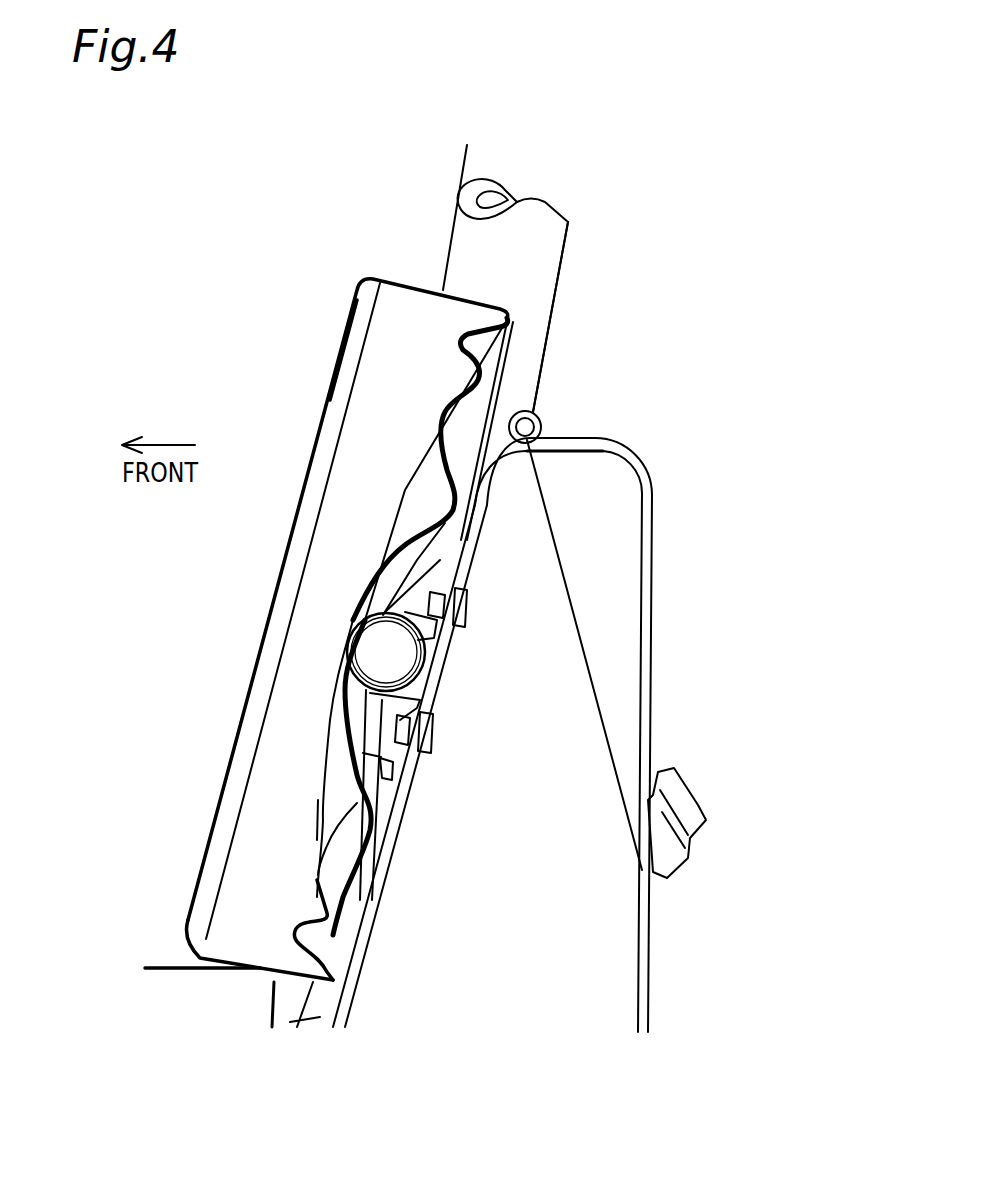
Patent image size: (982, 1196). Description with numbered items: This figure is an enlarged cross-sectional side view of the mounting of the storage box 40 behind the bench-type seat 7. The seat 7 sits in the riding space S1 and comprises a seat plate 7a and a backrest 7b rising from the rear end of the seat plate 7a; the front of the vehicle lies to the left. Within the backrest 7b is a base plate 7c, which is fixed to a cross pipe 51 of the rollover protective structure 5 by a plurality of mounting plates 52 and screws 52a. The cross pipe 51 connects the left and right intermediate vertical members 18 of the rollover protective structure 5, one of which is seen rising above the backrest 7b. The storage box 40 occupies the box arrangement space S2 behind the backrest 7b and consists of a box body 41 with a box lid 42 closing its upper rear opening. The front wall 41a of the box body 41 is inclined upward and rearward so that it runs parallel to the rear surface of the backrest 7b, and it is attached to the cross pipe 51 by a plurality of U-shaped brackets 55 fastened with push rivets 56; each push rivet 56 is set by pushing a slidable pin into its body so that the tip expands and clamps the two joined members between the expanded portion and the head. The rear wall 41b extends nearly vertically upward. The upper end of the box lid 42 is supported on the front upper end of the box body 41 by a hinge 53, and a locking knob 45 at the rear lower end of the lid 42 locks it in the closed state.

The rollover protective structure 5 is at (550, 317).
The bench-type seat 7 is at (100, 795).
The seat plate 7a is at (160, 967).
The backrest 7b is at (333, 443).
The base plate 7c is at (360, 858).
The vertical member 18 is at (480, 235).
The storage box 40 is at (573, 713).
The box body 41 is at (640, 970).
The front wall 41a is at (370, 897).
The rear wall 41b is at (640, 908).
The box lid 42 is at (650, 580).
The locking knob 45 is at (687, 822).
The cross pipe 51 is at (373, 657).
The mounting plate 52 is at (378, 742).
The screw 52a is at (385, 773).
The hinge 53 is at (541, 420).
The U-shaped bracket 55 is at (417, 693).
The push rivet 56 is at (457, 612).
The riding space S1 is at (158, 579).
The box arrangement space S2 is at (668, 392).